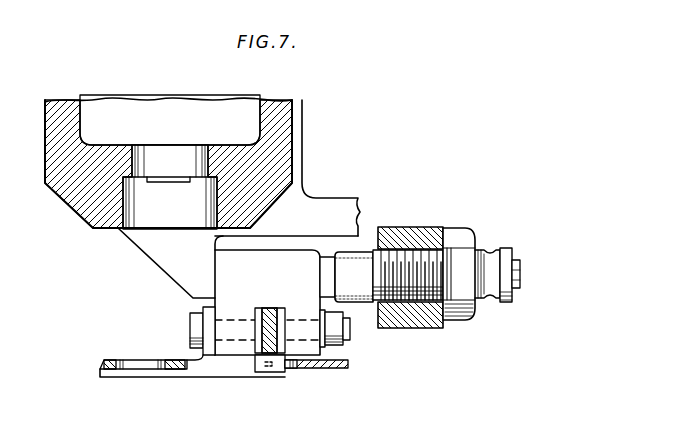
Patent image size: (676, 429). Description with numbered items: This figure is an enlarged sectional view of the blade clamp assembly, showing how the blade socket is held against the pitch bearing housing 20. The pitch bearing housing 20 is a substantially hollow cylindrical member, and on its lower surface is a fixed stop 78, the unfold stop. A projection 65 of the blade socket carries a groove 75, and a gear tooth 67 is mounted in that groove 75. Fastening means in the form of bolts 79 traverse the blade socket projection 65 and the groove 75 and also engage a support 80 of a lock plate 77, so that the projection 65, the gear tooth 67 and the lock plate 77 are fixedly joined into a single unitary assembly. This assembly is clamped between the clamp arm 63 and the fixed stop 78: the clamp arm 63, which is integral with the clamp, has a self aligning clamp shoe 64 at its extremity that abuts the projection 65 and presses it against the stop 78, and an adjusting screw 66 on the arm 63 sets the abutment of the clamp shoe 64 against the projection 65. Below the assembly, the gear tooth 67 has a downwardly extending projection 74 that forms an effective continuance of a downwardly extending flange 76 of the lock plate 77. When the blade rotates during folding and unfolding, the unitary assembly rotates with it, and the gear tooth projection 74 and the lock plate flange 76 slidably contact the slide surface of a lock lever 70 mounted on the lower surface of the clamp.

The pitch bearing housing 20 is at (52, 160).
The fixed stop 78 is at (152, 248).
The blade socket projection 65 is at (230, 283).
The groove 75 is at (268, 308).
The gear tooth 67 is at (290, 330).
The support 80 is at (207, 330).
The lock plate 77 is at (108, 362).
The bolts 79 is at (350, 333).
The flange 76 is at (208, 363).
The projection 74 is at (258, 373).
The lock lever 70 is at (342, 372).
The clamp shoe 64 is at (360, 258).
The clamp arm 63 is at (422, 328).
The screw 66 is at (512, 298).